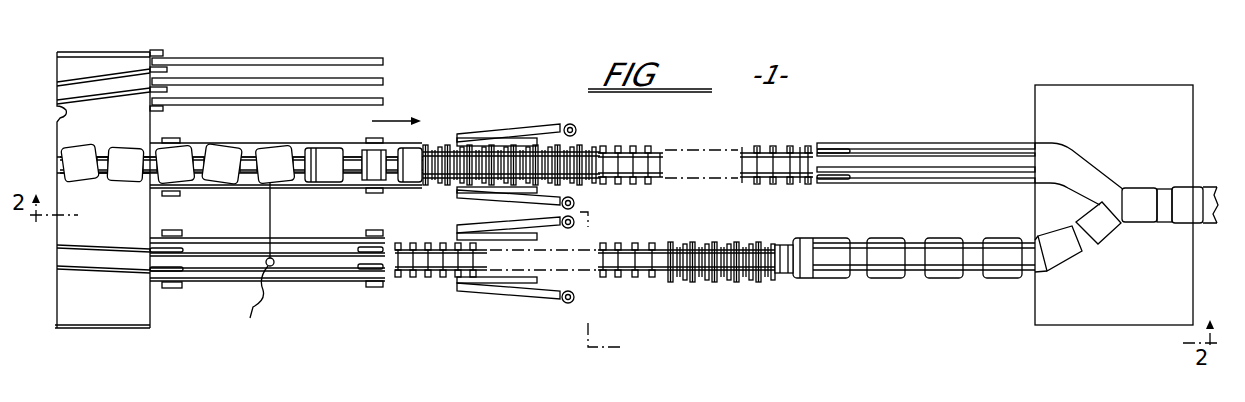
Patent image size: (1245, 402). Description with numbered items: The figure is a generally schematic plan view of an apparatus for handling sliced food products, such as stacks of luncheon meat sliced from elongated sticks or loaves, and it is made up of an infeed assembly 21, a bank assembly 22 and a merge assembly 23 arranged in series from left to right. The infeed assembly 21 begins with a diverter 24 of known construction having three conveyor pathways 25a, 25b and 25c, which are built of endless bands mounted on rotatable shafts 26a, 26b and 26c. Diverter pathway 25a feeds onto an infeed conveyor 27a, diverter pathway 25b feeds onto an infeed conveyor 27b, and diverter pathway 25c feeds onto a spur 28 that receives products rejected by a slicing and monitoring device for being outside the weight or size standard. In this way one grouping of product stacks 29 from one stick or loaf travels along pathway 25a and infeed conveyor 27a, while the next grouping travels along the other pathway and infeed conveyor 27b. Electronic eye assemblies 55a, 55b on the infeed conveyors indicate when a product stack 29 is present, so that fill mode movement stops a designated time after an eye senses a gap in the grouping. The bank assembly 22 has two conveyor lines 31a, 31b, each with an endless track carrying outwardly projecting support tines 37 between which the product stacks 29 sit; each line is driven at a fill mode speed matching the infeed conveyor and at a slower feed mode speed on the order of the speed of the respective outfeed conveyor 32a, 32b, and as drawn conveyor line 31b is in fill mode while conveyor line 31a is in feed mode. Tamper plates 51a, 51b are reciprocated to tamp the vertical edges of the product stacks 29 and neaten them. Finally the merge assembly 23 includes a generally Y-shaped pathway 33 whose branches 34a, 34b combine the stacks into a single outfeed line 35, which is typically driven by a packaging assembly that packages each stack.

The infeed assembly 21 is at (185, 310).
The bank assembly 22 is at (574, 315).
The merge assembly 23 is at (1016, 317).
The diverter 24 is at (77, 314).
The conveyor pathway 25a is at (60, 268).
The conveyor pathway 25b is at (60, 176).
The conveyor pathway 25c is at (60, 111).
The rotatable shaft 26a is at (160, 287).
The rotatable shaft 26b is at (180, 196).
The rotatable shaft 26c is at (155, 52).
The infeed conveyor 27a is at (290, 284).
The infeed conveyor 27b is at (298, 189).
The spur 28 is at (289, 57).
The product stacks 29 is at (68, 146).
The conveyor line 31a is at (642, 275).
The conveyor line 31b is at (656, 150).
The outfeed conveyor 32a is at (917, 273).
The outfeed conveyor 32b is at (905, 145).
The Y-shaped pathway 33 is at (1090, 185).
The branch 34a is at (1043, 272).
The branch 34b is at (1050, 152).
The outfeed line 35 is at (1163, 187).
The support tines 37 is at (367, 268).
The tamper plate 51a is at (460, 228).
The tamper plate 51b is at (470, 135).
The electronic eye assembly 55a is at (268, 267).
The electronic eye assembly 55b is at (268, 157).